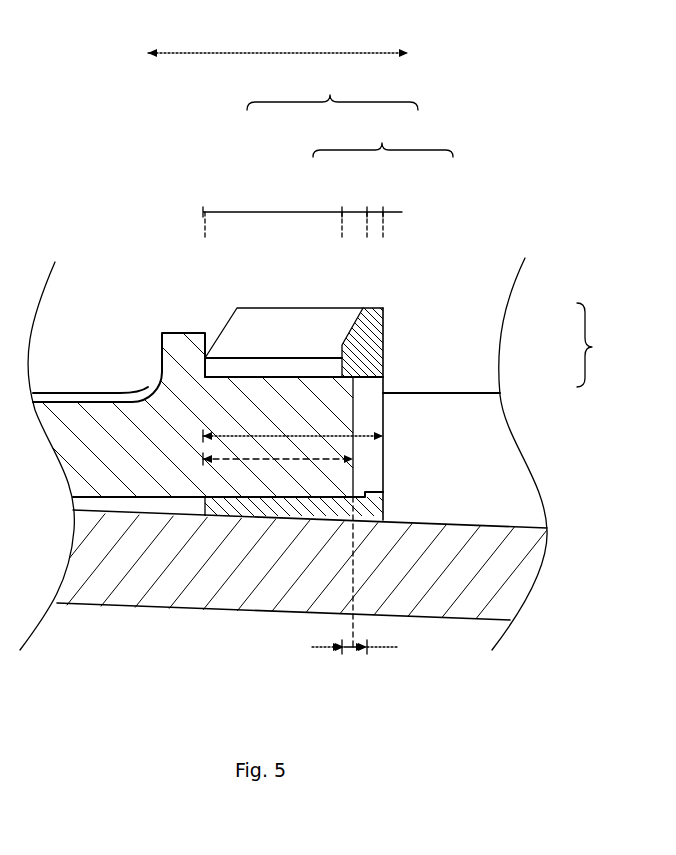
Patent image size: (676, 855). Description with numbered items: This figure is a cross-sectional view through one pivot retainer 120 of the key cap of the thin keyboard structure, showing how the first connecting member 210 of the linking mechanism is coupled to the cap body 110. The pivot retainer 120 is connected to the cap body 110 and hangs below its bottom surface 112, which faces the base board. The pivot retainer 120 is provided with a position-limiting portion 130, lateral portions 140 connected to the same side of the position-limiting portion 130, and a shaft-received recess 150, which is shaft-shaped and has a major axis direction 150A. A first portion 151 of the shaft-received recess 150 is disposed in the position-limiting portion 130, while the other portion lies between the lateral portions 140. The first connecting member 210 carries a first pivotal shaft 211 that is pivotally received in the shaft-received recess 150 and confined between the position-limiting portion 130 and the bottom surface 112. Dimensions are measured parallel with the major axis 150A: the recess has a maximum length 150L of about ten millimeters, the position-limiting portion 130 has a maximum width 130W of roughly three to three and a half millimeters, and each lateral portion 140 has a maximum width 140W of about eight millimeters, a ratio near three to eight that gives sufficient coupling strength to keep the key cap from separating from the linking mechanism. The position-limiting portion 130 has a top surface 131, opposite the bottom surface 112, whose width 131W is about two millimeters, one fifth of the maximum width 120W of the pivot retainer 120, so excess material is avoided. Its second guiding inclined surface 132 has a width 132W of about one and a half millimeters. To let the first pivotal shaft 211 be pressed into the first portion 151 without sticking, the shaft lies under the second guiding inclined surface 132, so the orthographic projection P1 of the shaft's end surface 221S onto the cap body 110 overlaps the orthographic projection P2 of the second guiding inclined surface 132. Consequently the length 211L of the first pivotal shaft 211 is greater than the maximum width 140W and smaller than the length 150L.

The cap body 110 is at (533, 577).
The bottom surface 112 is at (510, 525).
The pivot retainer 120 is at (608, 345).
The maximum width of pivot retainer 120W is at (332, 90).
The position-limiting portion 130 is at (378, 351).
The maximum width of position-limiting portion 130W is at (383, 136).
The top surface 131 is at (375, 310).
The width of top surface 131W is at (377, 210).
The second guiding inclined surface 132 is at (343, 310).
The width of second guiding inclined surface 132W is at (353, 212).
The lateral portion 140 is at (325, 345).
The maximum width of lateral portion 140W is at (277, 212).
The shaft-received recess 150 is at (385, 387).
The major axis direction 150A is at (278, 41).
The maximum length of shaft-received recess 150L is at (270, 467).
The first portion 151 is at (356, 415).
The first connecting member 210 is at (73, 412).
The first pivotal shaft 211 is at (183, 488).
The length of first pivotal shaft 211L is at (270, 467).
The side surface 221S is at (357, 485).
The orthographic projection of end surface P1 is at (358, 652).
The orthographic projection of second guiding inclined surface P2 is at (347, 657).